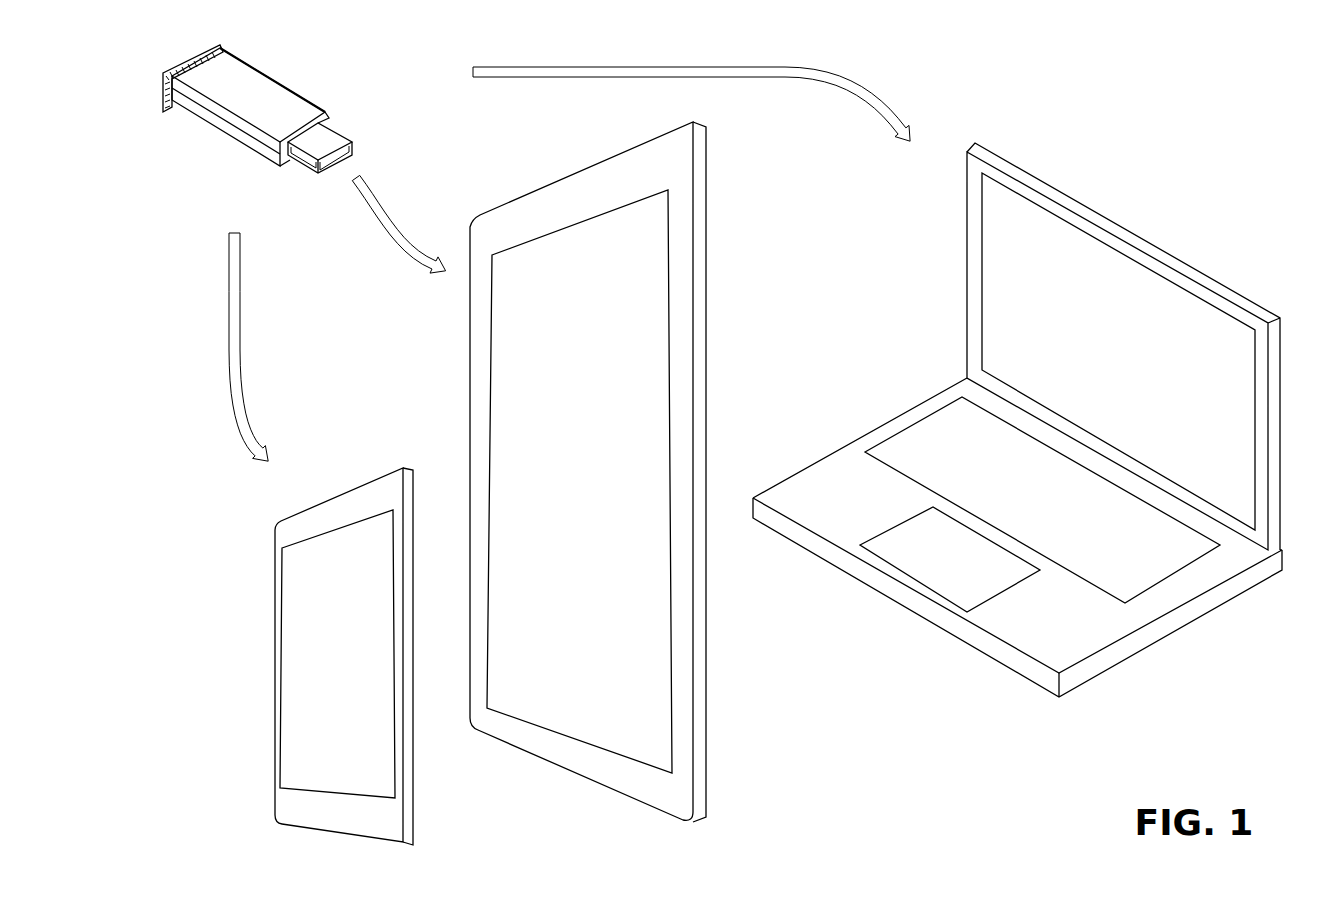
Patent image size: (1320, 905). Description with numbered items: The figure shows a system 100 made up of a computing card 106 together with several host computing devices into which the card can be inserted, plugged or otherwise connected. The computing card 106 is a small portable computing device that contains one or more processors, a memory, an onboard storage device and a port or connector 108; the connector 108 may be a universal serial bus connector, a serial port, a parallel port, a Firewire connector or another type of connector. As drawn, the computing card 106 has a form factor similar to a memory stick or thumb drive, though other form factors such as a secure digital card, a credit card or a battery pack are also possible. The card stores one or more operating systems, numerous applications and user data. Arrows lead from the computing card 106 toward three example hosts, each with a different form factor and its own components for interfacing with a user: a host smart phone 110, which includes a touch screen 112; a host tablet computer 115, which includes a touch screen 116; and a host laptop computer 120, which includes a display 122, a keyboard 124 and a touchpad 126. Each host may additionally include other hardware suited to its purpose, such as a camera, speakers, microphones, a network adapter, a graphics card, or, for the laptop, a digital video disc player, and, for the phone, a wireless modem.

The system 100 is at (1167, 91).
The computing card 106 is at (253, 134).
The connector 108 is at (328, 138).
The host smart phone 110 is at (377, 479).
The touch screen 112 is at (337, 654).
The host tablet computer 115 is at (713, 258).
The touch screen 116 is at (579, 481).
The host laptop computer 120 is at (928, 388).
The display 122 is at (1118, 351).
The keyboard 124 is at (1042, 500).
The touchpad 126 is at (950, 559).